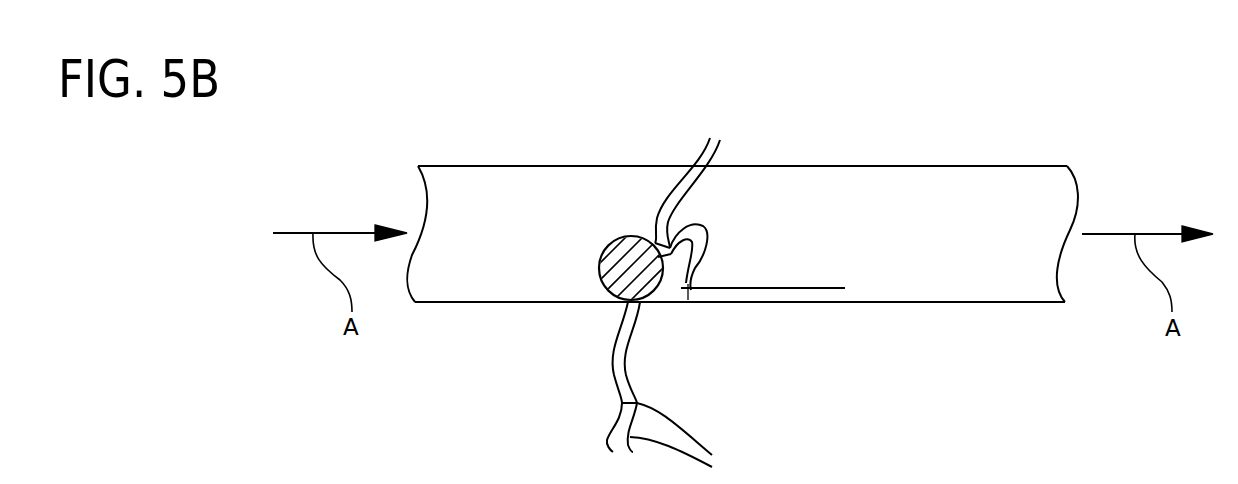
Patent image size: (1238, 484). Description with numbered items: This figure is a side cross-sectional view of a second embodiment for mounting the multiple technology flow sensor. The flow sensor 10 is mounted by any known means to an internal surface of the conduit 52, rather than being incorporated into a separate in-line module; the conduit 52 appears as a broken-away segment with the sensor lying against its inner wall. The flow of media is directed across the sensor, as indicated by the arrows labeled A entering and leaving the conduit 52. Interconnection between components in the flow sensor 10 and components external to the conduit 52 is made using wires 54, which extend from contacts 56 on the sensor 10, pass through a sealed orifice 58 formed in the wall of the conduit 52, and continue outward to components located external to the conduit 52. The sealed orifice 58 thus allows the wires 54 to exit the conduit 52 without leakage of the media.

The flow sensor 10 is at (800, 288).
The conduit 52 is at (920, 166).
The wires 54 is at (676, 297).
The contacts 56 is at (688, 300).
The sealed orifice 58 is at (598, 275).